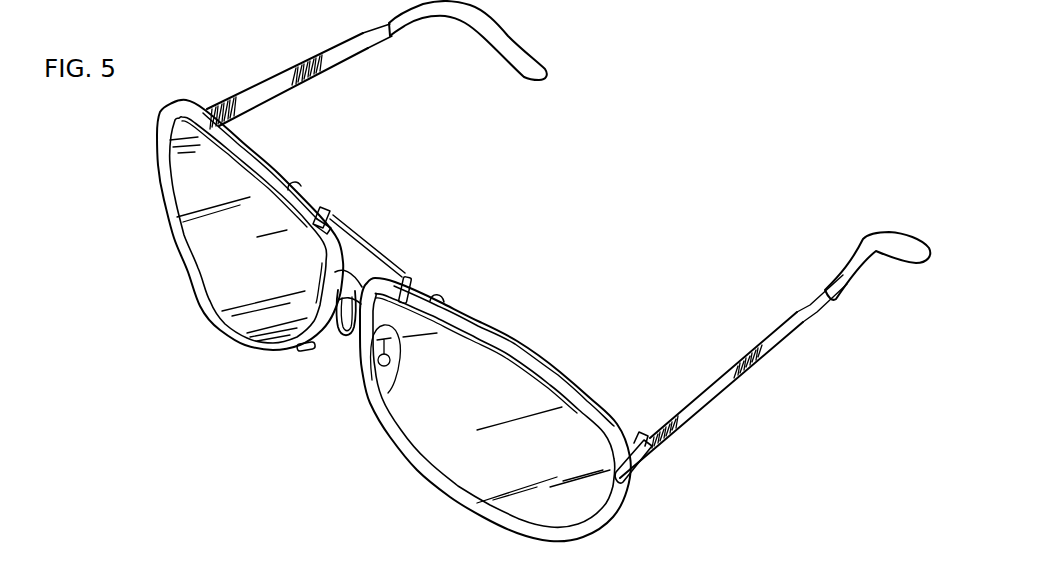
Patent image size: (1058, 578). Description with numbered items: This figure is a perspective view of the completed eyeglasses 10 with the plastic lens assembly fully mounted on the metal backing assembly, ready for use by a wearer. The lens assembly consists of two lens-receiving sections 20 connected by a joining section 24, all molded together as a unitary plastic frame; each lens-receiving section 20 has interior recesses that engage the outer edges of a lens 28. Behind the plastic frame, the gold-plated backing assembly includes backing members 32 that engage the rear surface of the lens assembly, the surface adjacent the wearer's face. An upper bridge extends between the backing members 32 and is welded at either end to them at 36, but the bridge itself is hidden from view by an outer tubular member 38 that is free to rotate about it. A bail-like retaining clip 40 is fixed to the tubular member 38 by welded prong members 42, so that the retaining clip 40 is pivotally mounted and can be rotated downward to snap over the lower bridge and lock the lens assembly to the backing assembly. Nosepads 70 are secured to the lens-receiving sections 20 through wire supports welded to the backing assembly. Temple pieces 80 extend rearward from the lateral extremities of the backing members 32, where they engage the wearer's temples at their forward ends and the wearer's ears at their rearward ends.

The eyeglasses 10 is at (516, 341).
The lens-receiving section 20 is at (203, 158).
The joining section 24 is at (325, 295).
The lens 28 is at (200, 235).
The backing member 32 is at (251, 151).
The weld 36 is at (300, 184).
The outer tubular member 38 is at (364, 241).
The retaining clip 40 is at (343, 336).
The prong member 42 is at (328, 221).
The nosepad 70 is at (302, 350).
The temple piece 80 is at (343, 46).